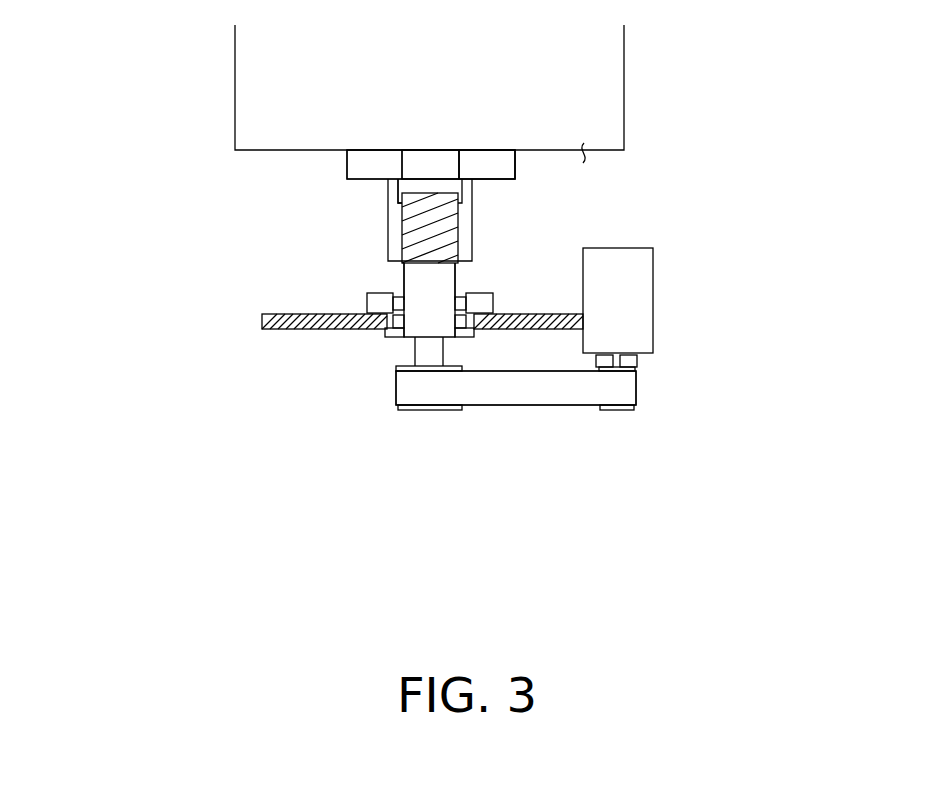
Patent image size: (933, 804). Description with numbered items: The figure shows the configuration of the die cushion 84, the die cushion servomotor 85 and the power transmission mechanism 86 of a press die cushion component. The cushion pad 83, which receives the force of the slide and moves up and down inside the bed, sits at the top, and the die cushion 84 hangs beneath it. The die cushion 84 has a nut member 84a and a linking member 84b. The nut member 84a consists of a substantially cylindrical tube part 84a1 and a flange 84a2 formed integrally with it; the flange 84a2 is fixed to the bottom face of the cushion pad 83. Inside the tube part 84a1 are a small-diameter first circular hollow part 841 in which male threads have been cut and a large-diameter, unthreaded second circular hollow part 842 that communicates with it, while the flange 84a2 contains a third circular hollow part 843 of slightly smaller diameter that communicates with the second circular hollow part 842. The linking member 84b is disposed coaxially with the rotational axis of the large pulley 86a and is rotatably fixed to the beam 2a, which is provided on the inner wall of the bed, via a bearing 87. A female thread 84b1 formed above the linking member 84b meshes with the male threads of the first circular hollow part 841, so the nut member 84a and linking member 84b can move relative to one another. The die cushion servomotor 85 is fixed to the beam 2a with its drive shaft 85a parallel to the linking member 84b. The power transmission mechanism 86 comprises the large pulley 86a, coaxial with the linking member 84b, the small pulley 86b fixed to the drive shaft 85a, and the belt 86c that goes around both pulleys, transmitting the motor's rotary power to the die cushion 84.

The cushion pad 83 is at (585, 62).
The die cushion 84 is at (333, 185).
The nut member 84a is at (847, 100).
The tube part 84a1 is at (472, 212).
The flange 84a2 is at (515, 155).
The linking member 84b is at (443, 282).
The female thread 84b1 is at (407, 244).
The first circular hollow part 841 is at (407, 218).
The second circular hollow part 842 is at (405, 185).
The third circular hollow part 843 is at (420, 158).
The die cushion servomotor 85 is at (632, 290).
The drive shaft 85a is at (623, 364).
The power transmission mechanism 86 is at (539, 416).
The large pulley 86a is at (400, 410).
The small pulley 86b is at (611, 417).
The belt 86c is at (497, 388).
The bearing 87 is at (385, 338).
The beam 2a is at (283, 329).